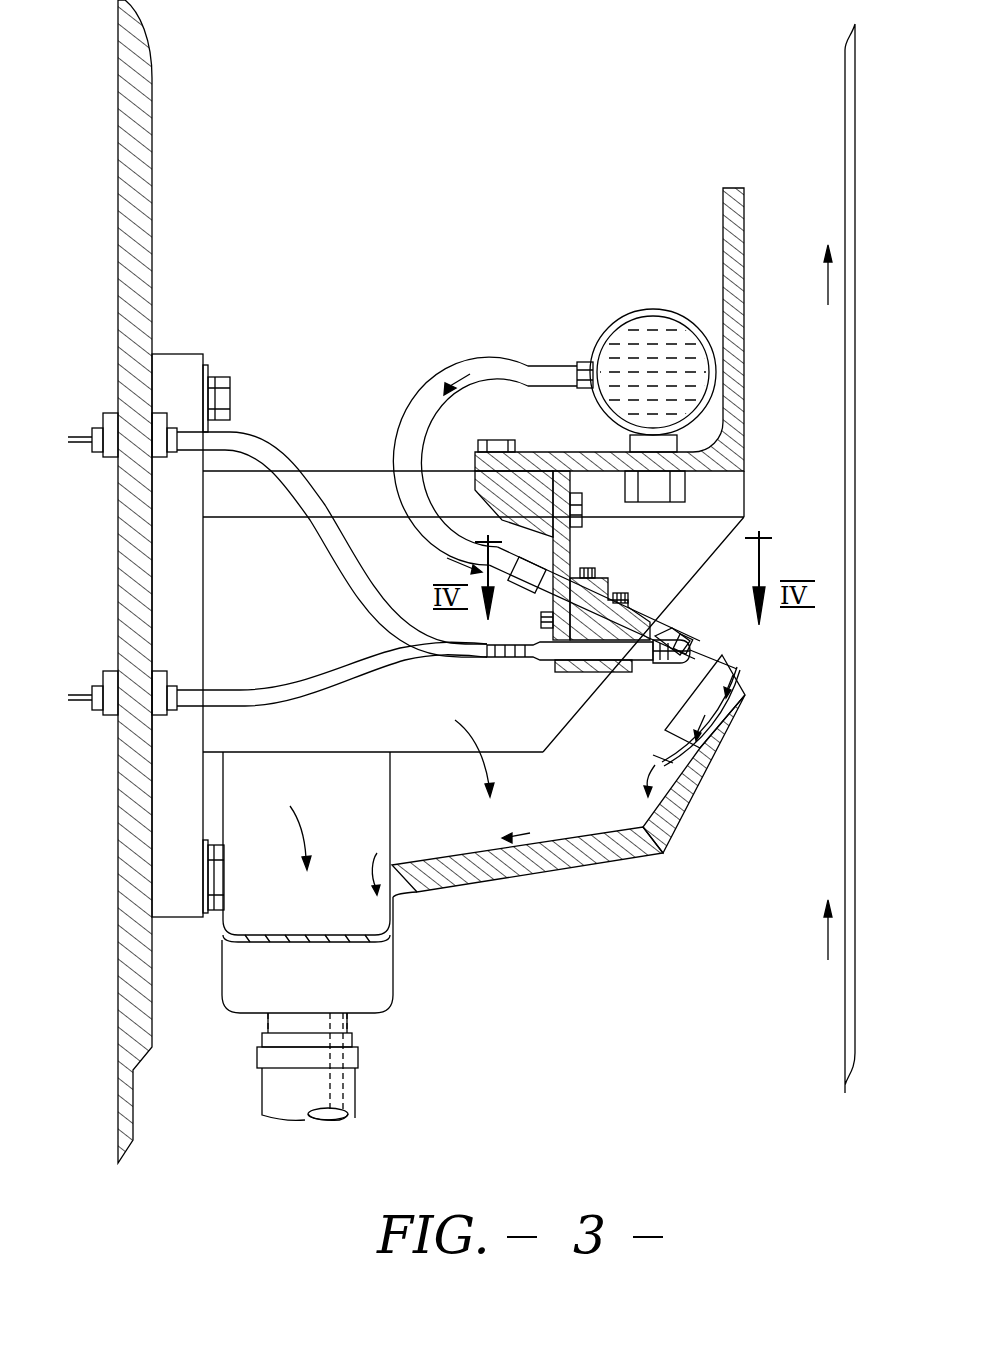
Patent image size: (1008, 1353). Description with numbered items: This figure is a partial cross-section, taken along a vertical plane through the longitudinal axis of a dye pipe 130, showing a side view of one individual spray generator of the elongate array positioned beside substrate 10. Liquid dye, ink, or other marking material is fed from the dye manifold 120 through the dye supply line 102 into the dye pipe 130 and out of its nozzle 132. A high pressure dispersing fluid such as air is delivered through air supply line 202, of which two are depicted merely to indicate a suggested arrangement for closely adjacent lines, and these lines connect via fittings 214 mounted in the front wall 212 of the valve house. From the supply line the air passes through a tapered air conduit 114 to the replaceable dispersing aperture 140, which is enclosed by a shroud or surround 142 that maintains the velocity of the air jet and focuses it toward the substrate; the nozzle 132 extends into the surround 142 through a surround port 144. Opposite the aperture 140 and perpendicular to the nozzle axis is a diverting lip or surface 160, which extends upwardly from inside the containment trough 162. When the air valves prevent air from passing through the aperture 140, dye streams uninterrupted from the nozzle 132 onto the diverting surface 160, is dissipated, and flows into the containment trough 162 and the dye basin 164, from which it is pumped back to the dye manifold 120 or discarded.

The web 10 is at (854, 452).
The dye supply line 102 is at (538, 367).
The air conduit 114 is at (550, 663).
The dye manifold 120 is at (664, 310).
The dye pipe 130 is at (656, 608).
The nozzle 132 is at (668, 628).
The dispersing aperture 140 is at (674, 665).
The surround 142 is at (684, 674).
The surround port 144 is at (679, 637).
The diverting surface 160 is at (744, 678).
The containment trough 162 is at (442, 787).
The dye basin 164 is at (307, 882).
The air supply line 202 is at (380, 653).
The front wall 212 is at (152, 155).
The fittings 214 is at (102, 428).